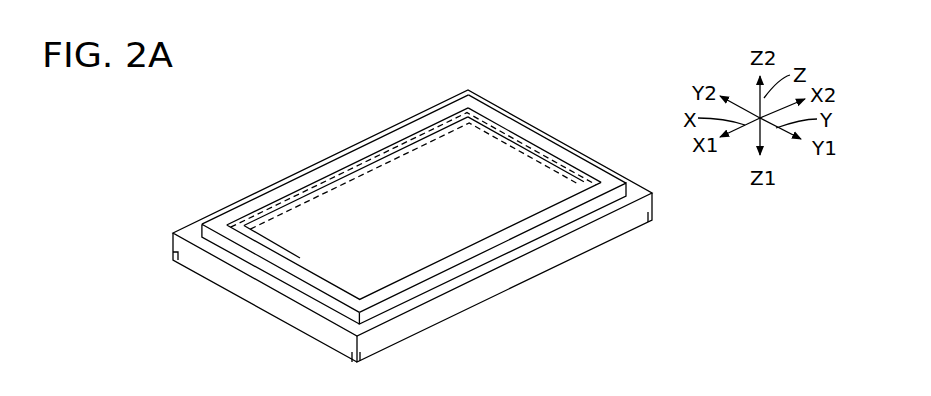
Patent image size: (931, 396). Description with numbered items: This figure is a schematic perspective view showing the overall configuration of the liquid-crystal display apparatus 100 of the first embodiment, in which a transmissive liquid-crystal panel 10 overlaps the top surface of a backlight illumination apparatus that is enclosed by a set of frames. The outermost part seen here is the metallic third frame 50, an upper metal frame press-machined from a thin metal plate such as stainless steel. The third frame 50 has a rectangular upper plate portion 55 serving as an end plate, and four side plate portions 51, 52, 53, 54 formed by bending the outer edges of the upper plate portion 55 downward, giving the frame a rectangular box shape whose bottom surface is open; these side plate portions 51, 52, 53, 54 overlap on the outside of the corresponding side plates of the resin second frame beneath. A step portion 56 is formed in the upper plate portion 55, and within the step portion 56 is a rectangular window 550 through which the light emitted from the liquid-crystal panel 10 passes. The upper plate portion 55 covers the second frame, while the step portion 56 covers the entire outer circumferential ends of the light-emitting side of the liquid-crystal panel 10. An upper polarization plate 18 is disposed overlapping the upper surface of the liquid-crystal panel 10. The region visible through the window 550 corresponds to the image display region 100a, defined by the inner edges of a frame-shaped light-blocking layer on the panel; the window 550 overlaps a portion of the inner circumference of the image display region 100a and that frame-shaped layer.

The liquid-crystal display apparatus 100 is at (194, 103).
The image display region 100a is at (392, 132).
The liquid-crystal panel 10 is at (343, 193).
The upper polarization plate 18 is at (305, 213).
The third frame 50 is at (508, 108).
The side plate portion 51 is at (537, 267).
The side plate portion 52 is at (235, 210).
The side plate portion 53 is at (253, 297).
The side plate portion 54 is at (629, 180).
The upper plate portion 55 is at (597, 166).
The step portion 56 is at (570, 150).
The window 550 is at (537, 132).